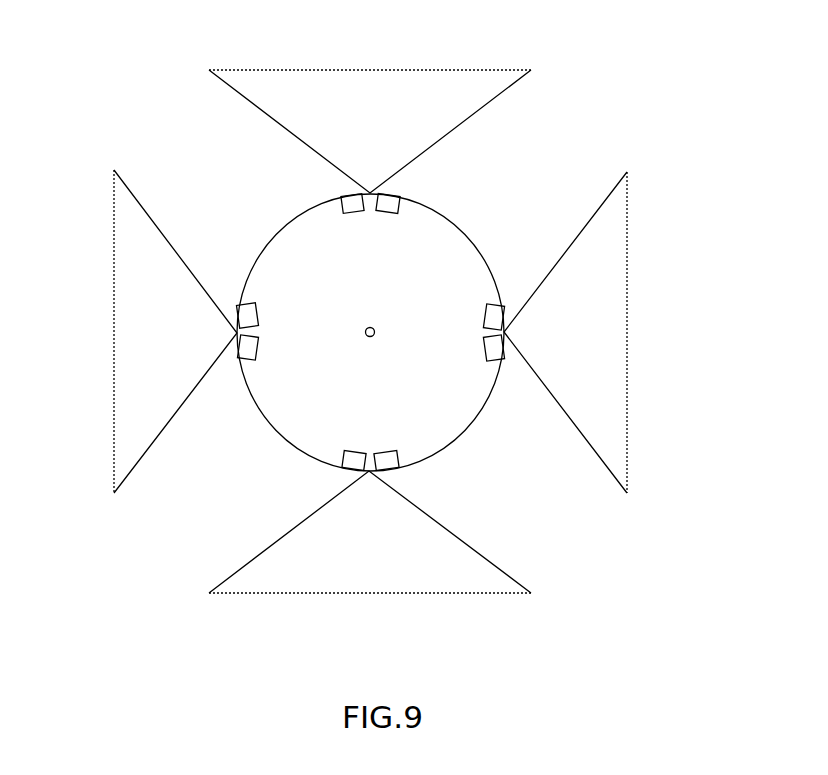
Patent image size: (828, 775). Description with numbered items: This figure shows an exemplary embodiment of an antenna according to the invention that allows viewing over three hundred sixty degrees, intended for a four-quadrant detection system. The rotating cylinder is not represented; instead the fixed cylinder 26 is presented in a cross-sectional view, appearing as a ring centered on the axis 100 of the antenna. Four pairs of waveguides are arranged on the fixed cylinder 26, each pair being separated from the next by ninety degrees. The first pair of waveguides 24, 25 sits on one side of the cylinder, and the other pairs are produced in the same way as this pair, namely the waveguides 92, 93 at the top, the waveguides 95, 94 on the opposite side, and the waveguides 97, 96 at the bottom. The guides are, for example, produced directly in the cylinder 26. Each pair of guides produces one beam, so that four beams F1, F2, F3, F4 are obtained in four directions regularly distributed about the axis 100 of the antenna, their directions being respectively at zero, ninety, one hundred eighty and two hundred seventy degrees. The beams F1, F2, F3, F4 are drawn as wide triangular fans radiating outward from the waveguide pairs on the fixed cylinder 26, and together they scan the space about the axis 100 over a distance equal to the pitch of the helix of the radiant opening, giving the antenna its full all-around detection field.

The beam F1 is at (628, 295).
The beam F2 is at (392, 70).
The beam F3 is at (114, 322).
The beam F4 is at (352, 594).
The fixed cylinder 26 is at (472, 229).
The axis 100 is at (375, 327).
The waveguide 24 is at (495, 312).
The waveguide 25 is at (495, 348).
The waveguide 92 is at (348, 200).
The waveguide 93 is at (390, 200).
The pad 94 is at (245, 350).
The waveguide 95 is at (245, 315).
The waveguide 96 is at (385, 465).
The waveguide 97 is at (352, 465).